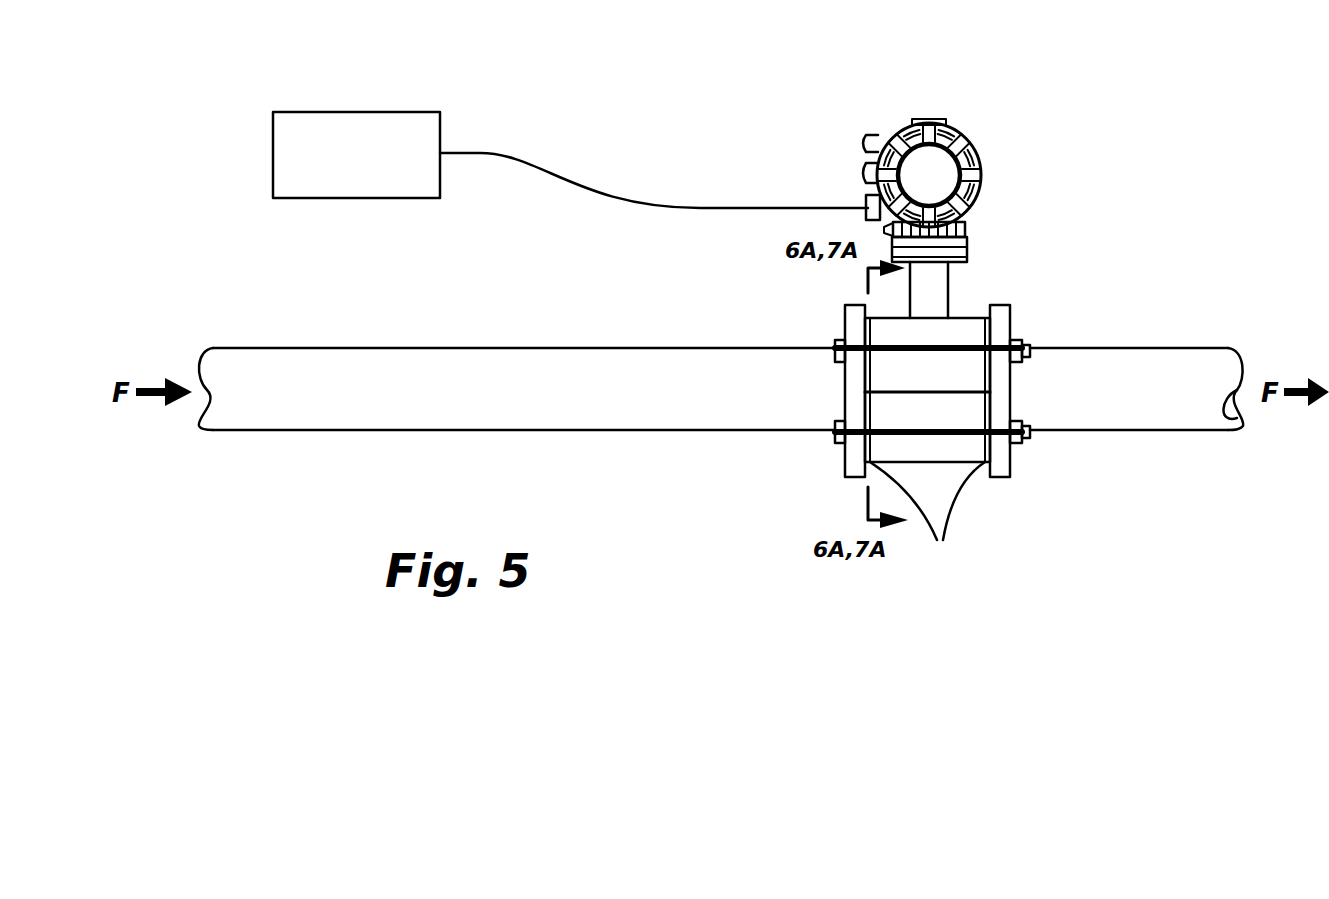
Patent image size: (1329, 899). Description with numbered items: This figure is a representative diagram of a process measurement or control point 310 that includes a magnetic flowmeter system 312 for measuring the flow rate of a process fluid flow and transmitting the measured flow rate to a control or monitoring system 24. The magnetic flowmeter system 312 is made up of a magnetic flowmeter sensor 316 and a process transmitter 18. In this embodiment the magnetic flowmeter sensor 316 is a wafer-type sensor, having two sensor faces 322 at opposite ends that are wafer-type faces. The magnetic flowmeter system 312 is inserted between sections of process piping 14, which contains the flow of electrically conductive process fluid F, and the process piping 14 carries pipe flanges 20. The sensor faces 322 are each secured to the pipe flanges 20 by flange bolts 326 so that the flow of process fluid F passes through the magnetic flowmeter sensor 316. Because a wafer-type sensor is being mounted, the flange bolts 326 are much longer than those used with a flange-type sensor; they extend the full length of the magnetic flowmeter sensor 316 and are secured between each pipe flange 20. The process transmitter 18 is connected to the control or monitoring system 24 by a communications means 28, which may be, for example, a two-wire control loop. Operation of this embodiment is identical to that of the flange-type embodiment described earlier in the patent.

The process piping 14 is at (516, 436).
The process transmitter 18 is at (982, 196).
The pipe flanges 20 is at (852, 478).
The control or monitoring system 24 is at (375, 112).
The communications means 28 is at (634, 193).
The process measurement or control point 310 is at (1168, 140).
The magnetic flowmeter system 312 is at (963, 196).
The magnetic flowmeter sensor 316 is at (951, 409).
The sensor faces 322 is at (927, 516).
The flange bolts 326 is at (1027, 342).